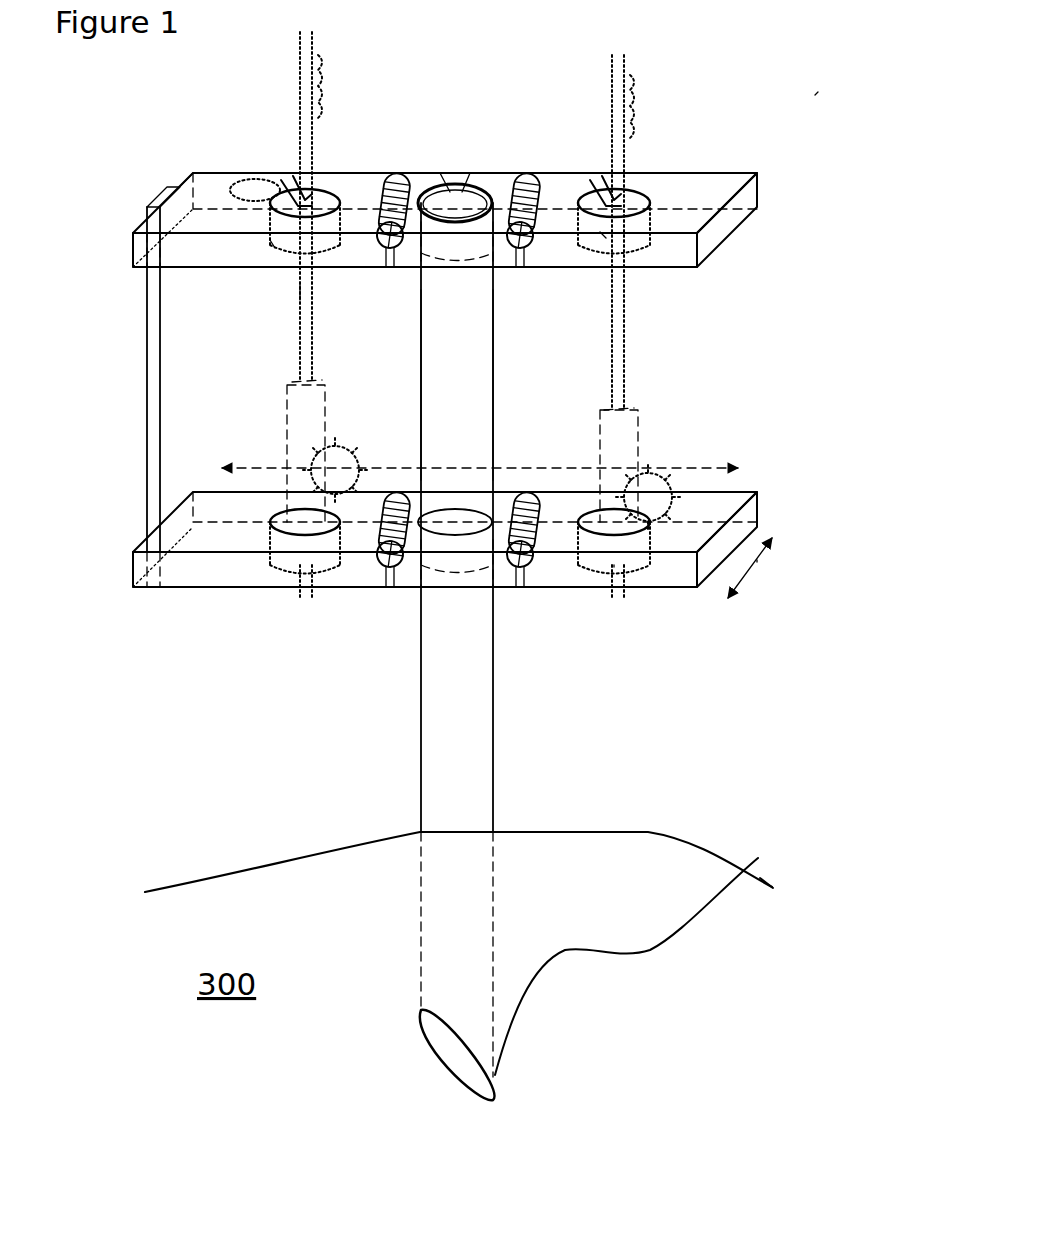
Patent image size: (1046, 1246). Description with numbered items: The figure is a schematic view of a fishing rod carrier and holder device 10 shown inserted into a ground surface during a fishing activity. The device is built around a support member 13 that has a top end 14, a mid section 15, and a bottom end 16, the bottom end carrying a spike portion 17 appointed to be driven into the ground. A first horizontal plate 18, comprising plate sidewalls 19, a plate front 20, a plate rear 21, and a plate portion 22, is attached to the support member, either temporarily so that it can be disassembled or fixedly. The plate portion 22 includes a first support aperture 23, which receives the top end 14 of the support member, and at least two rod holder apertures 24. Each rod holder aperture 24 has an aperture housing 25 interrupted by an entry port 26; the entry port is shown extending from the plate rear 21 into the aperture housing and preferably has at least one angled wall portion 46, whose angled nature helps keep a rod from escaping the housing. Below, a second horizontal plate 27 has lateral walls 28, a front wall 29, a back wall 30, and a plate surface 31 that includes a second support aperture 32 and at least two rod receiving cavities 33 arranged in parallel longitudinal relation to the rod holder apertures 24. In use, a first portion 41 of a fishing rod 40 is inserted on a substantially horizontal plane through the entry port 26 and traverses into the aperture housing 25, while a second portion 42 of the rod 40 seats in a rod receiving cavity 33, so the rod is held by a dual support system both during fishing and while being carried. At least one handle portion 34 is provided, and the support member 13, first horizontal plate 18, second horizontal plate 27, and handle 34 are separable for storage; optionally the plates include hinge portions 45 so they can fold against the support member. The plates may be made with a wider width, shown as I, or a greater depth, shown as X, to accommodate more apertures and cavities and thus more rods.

The fishing rod carrier and holder device 10 is at (820, 88).
The support member 13 is at (485, 715).
The top end 14 is at (453, 195).
The mid section 15 is at (493, 371).
The bottom end 16 is at (420, 897).
The spike portion 17 is at (642, 948).
The first horizontal plate 18 is at (762, 190).
The plate sidewalls 19 is at (207, 220).
The plate front 20 is at (540, 268).
The plate rear 21 is at (708, 185).
The plate portion 22 is at (147, 203).
The first support aperture 23 is at (488, 195).
The rod holder apertures 24 is at (268, 246).
The aperture housing 25 is at (322, 180).
The entry port 26 is at (273, 172).
The second horizontal plate 27 is at (762, 508).
The lateral walls 28 is at (143, 550).
The front wall 29 is at (230, 575).
The back wall 30 is at (230, 503).
The plate surface 31 is at (715, 495).
The second support aperture 32 is at (470, 560).
The rod receiving cavities 33 is at (338, 563).
The handle portion 34 is at (147, 490).
The fishing rod 40 is at (295, 291).
The first portion 41 is at (297, 135).
The second portion 42 is at (620, 565).
The hinge portions 45 is at (398, 173).
The angled wall portion 46 is at (237, 178).
The width I is at (513, 450).
The depth X is at (757, 560).